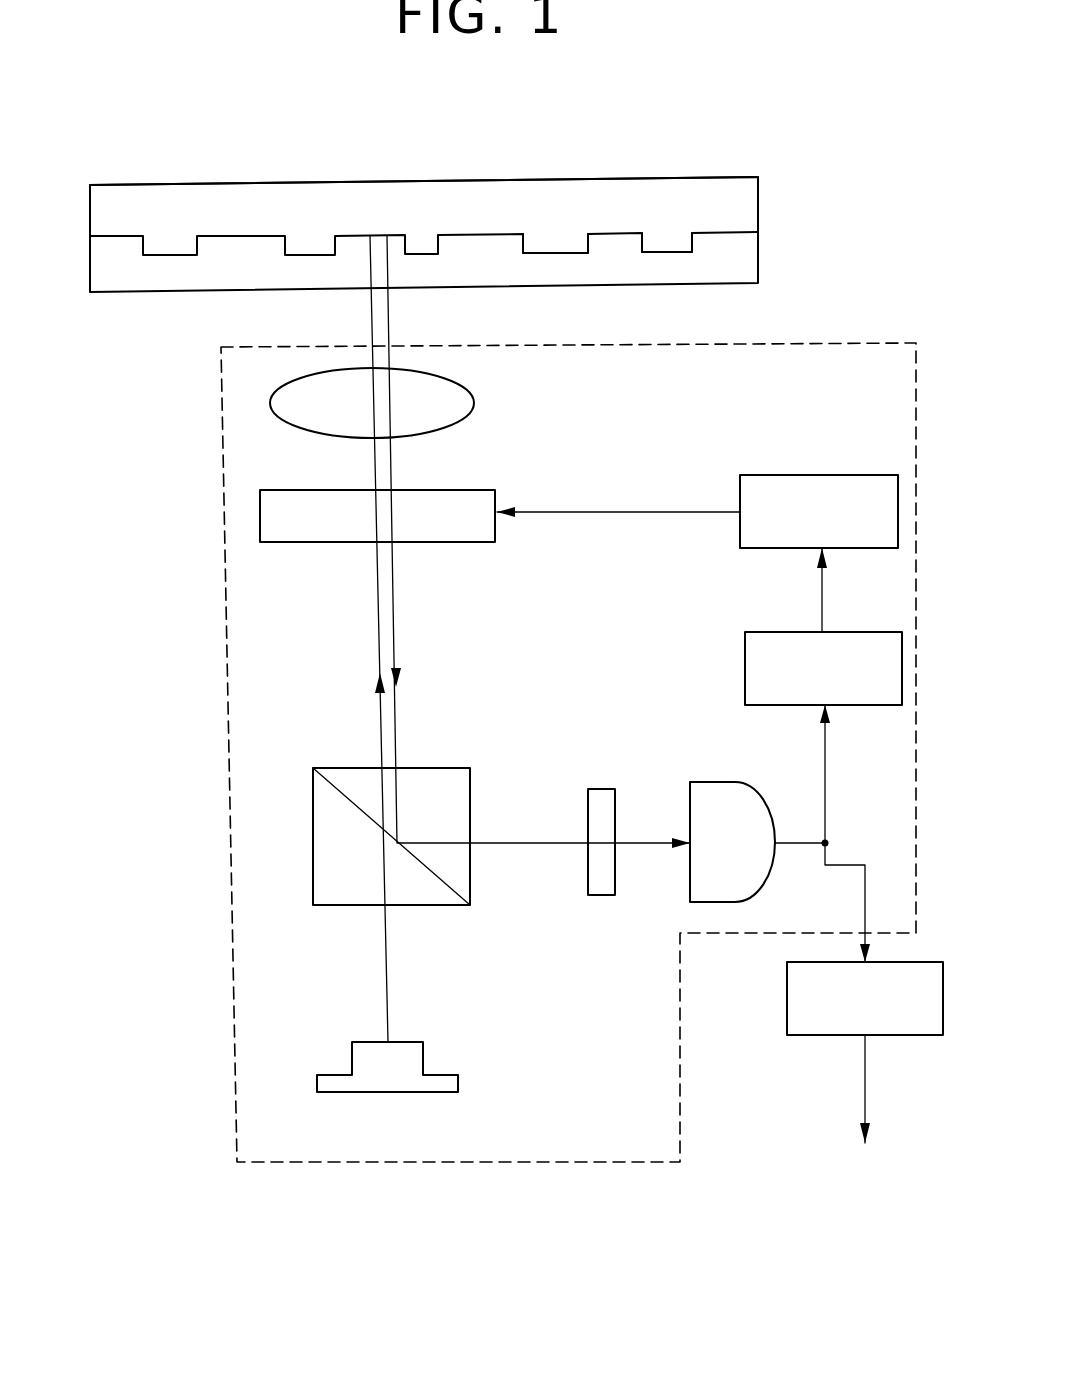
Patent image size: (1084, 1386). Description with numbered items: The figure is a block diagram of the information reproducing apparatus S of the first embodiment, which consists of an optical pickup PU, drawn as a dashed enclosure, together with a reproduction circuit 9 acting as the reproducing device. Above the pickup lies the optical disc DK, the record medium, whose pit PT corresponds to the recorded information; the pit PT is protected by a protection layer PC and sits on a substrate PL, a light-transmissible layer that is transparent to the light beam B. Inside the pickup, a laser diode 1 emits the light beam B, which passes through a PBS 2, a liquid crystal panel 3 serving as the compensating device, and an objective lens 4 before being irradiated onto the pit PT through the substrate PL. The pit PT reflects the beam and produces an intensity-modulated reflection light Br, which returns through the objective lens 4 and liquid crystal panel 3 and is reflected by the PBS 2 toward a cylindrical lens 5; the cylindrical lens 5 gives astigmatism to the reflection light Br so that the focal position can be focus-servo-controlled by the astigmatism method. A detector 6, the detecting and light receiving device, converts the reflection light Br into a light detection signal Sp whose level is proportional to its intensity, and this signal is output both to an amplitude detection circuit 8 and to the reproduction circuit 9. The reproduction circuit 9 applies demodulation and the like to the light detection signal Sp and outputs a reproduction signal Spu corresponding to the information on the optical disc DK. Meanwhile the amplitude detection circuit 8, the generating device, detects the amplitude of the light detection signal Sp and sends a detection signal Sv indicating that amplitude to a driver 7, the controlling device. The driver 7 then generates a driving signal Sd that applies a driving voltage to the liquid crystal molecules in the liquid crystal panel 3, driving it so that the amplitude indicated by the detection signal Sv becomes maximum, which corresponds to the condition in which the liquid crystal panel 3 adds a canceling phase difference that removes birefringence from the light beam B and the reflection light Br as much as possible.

The laser diode 1 is at (425, 1045).
The PBS (Polarization Beam Splitter) 2 is at (455, 766).
The liquid crystal panel 3 is at (483, 545).
The objective lens 4 is at (475, 393).
The cylindrical lens 5 is at (588, 883).
The detector 6 is at (710, 782).
The driver 7 is at (868, 475).
The amplitude detection circuit 8 is at (870, 632).
The reproduction circuit 9 is at (917, 1037).
The optical pickup PU is at (470, 1165).
The optical disc DK is at (758, 198).
The substrate PL is at (758, 263).
The protection layer PC is at (422, 200).
The pit PT is at (557, 250).
The light beam B is at (375, 578).
The reflection light Br is at (395, 578).
The driving signal Sd is at (667, 512).
The detection signal Sv is at (815, 590).
The light detection signal Sp is at (800, 845).
The reproduction signal Spu is at (862, 1088).
The information reproducing apparatus S is at (698, 1185).